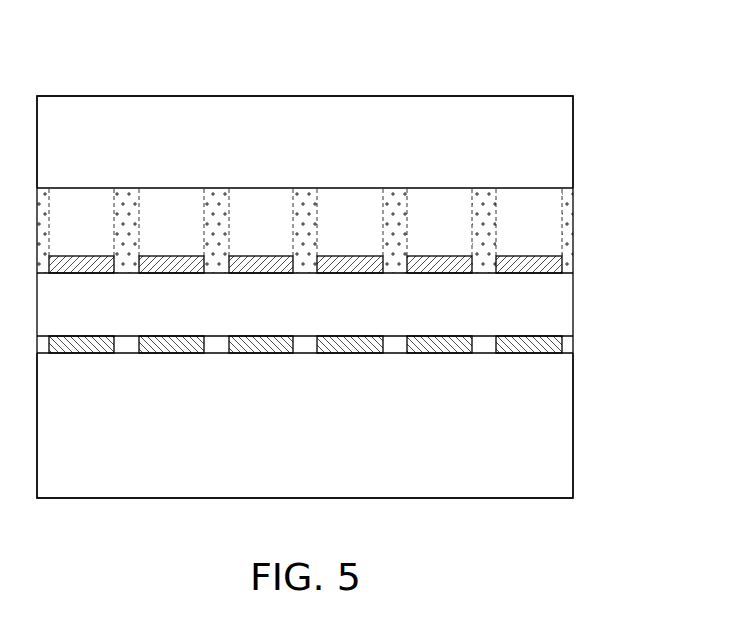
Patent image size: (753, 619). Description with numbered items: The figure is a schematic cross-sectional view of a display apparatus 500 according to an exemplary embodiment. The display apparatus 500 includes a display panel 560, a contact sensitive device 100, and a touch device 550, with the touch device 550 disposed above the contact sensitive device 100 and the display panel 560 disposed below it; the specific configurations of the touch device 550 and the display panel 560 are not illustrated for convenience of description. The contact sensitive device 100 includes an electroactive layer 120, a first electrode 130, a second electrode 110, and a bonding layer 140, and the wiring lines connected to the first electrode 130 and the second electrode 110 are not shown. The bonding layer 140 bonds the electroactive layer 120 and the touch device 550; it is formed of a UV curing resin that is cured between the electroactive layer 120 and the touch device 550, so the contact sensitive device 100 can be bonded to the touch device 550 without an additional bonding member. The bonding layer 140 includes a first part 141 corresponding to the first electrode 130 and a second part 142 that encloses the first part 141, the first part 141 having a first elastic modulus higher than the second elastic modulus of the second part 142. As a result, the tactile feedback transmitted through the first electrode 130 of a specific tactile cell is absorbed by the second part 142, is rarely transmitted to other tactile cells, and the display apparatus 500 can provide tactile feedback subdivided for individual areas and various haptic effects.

The display apparatus 500 is at (563, 37).
The touch device 550 is at (553, 135).
The display panel 560 is at (553, 418).
The contact sensitive device 100 is at (383, 270).
The bonding layer 140 is at (355, 230).
The first part 141 is at (447, 202).
The second part 142 is at (478, 222).
The first electrode 130 is at (447, 262).
The electroactive layer 120 is at (547, 297).
The second electrode 110 is at (463, 337).